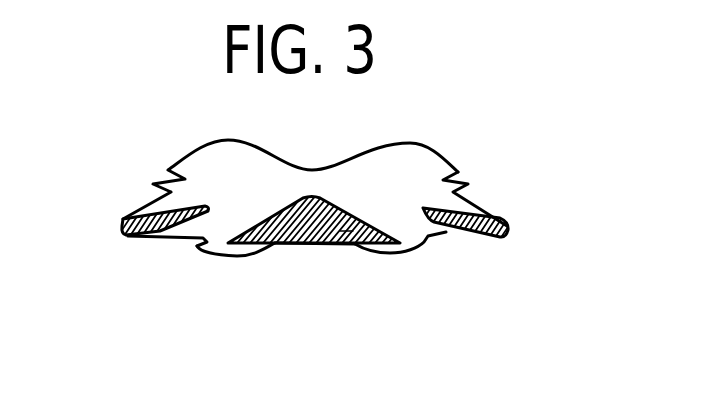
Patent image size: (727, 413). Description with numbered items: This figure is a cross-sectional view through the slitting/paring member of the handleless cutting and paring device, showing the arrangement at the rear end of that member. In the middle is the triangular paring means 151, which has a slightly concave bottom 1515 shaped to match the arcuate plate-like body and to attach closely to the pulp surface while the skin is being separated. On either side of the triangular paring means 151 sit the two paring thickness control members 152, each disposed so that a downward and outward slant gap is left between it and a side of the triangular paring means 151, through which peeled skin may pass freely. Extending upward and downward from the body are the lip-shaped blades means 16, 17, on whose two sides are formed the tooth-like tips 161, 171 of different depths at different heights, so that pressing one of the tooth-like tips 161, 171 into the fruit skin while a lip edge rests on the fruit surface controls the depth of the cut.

The lip-shaped blade means 16 is at (326, 171).
The tooth-like tips 161 is at (457, 186).
The lip-shaped blade means 17 is at (255, 255).
The tooth-like tips 171 is at (187, 246).
The concave bottom 1515 is at (307, 232).
The triangular paring means 151 is at (356, 247).
The paring thickness control members 152 is at (143, 237).